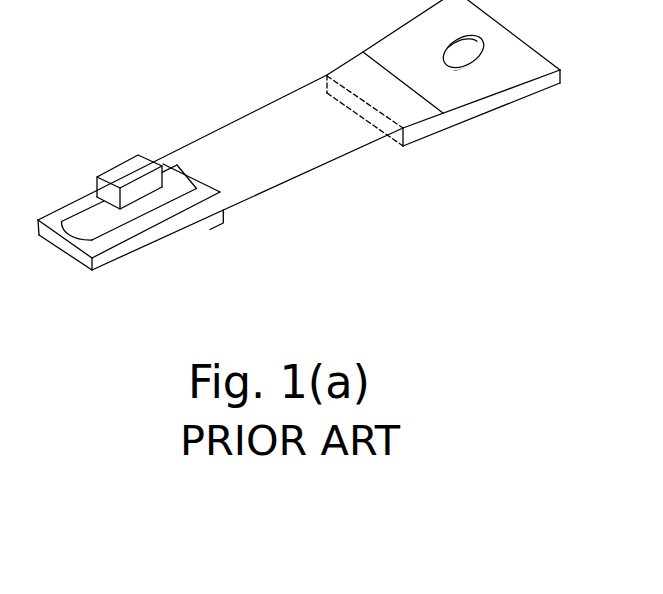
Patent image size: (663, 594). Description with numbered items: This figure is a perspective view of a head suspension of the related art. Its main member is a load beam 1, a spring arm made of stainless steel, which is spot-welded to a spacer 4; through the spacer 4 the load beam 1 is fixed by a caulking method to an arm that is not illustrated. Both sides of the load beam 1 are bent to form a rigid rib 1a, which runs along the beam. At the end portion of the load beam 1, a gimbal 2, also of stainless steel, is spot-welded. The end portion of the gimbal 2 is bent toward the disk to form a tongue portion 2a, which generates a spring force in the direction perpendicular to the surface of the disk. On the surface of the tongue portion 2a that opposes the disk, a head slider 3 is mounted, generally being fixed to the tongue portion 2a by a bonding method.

The load beam 1 is at (338, 157).
The rigid rib 1a is at (212, 228).
The gimbal 2 is at (162, 227).
The tongue portion 2a is at (90, 217).
The head slider 3 is at (127, 160).
The spacer 4 is at (530, 90).